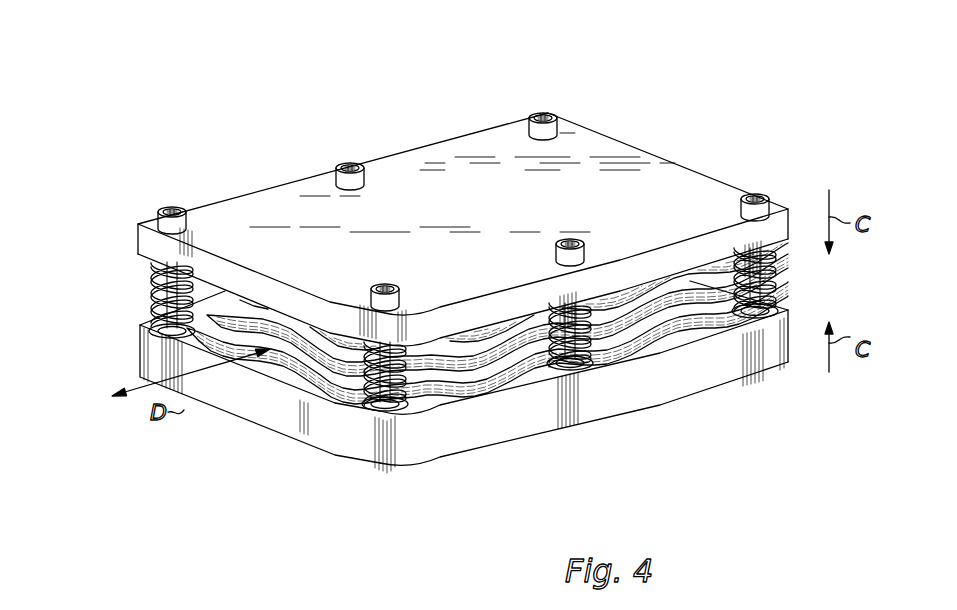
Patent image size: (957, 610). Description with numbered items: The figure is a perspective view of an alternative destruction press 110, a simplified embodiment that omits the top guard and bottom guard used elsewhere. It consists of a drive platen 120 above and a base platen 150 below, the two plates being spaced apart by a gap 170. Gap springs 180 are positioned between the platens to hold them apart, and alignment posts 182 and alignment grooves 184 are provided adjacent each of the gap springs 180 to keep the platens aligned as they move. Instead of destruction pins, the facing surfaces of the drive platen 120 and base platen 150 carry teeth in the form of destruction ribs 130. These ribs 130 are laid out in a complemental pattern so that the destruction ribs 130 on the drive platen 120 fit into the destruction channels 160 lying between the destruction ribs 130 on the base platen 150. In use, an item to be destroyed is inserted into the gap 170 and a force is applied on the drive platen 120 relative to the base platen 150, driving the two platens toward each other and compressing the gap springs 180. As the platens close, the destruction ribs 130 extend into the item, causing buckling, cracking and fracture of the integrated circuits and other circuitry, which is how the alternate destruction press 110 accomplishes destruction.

The alternative destruction press 110 is at (446, 283).
The drive platen 120 is at (474, 146).
The destruction ribs 130 is at (548, 307).
The base platen 150 is at (466, 444).
The destruction channels 160 is at (244, 366).
The gap 170 is at (140, 284).
The gap springs 180 is at (350, 448).
The alignment posts 182 is at (766, 200).
The alignment grooves 184 is at (410, 416).